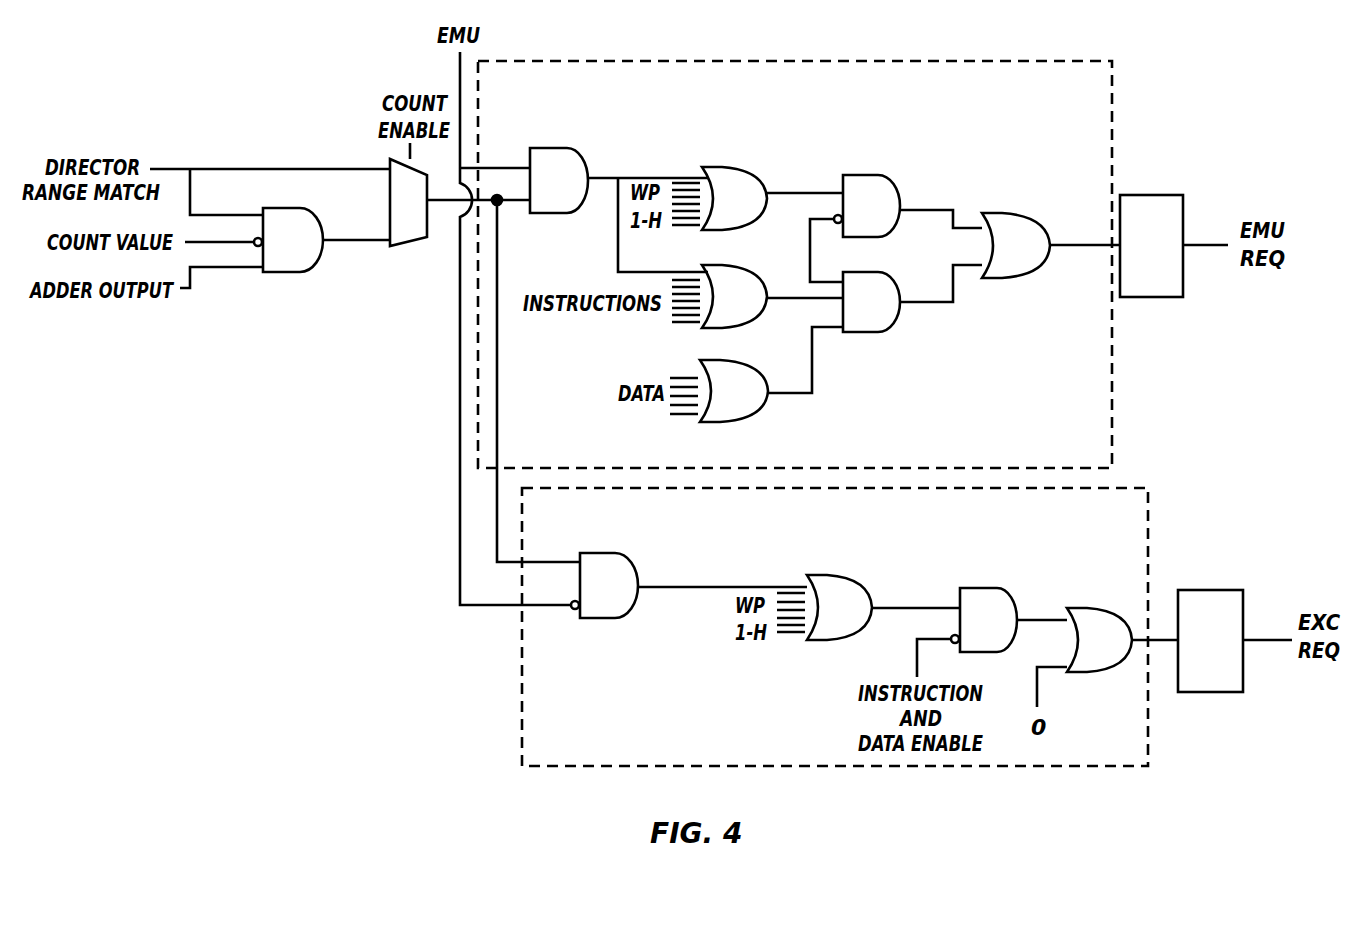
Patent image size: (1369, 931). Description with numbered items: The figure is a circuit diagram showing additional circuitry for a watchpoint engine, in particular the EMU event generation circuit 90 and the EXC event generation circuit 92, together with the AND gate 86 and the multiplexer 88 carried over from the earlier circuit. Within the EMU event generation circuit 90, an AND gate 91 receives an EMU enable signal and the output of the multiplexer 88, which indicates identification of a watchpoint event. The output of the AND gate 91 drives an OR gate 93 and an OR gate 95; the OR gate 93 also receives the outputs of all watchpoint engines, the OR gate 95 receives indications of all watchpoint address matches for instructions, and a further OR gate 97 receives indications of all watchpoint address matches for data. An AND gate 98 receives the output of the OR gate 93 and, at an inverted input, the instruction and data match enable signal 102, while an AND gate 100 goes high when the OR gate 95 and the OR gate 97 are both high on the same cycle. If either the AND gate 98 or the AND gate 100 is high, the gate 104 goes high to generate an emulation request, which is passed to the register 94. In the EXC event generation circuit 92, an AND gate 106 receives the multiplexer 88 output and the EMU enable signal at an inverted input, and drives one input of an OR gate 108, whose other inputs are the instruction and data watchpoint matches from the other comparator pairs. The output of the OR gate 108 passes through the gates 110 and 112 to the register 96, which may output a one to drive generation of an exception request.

The AND gate 86 is at (303, 209).
The multiplexer 88 is at (392, 248).
The EMU event generation circuit 90 is at (1055, 44).
The AND gate 91 is at (570, 148).
The EXC event generation circuit 92 is at (559, 784).
The OR gate 93 is at (750, 167).
The EMU request register 94 is at (1162, 195).
The OR gate 95 is at (750, 265).
The register 96 is at (1227, 590).
The OR gate 97 is at (750, 360).
The AND gate 98 is at (882, 175).
The AND gate 100 is at (880, 332).
The instruction and data match enable signal 102 is at (815, 275).
The gate 104 is at (1015, 213).
The AND gate 106 is at (620, 553).
The OR gate 108 is at (855, 575).
The AND gate 110 is at (997, 588).
The OR gate 112 is at (1080, 608).